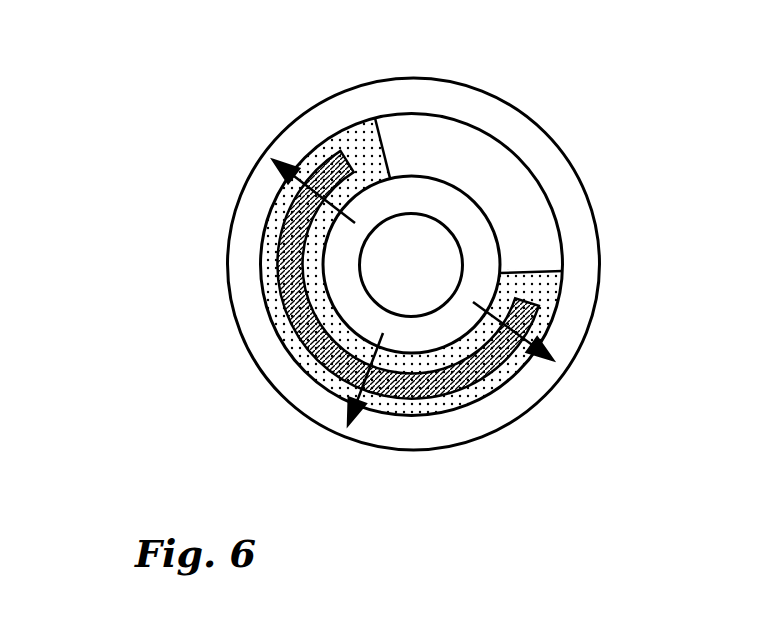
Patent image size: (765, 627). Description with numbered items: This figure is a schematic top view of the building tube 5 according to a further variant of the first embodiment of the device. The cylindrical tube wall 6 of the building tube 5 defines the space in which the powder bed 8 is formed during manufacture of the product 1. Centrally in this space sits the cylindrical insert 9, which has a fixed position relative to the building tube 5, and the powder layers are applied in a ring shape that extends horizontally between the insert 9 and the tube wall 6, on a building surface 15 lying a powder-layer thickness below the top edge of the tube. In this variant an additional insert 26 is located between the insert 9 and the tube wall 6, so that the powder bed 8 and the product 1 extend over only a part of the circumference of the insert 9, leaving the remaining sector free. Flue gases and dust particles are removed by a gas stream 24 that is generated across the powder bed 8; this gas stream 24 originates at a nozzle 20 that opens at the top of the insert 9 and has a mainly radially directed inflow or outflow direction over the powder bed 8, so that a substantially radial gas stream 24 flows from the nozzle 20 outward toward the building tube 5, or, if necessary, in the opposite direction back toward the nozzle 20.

The product 1 is at (317, 383).
The building tube 5 is at (247, 213).
The tube wall 6 is at (553, 197).
The powder bed 8 is at (542, 285).
The insert 9 is at (418, 261).
The building surface 15 is at (188, 295).
The nozzle 20 is at (445, 323).
The gas stream 24 is at (386, 395).
The additional insert 26 is at (503, 185).